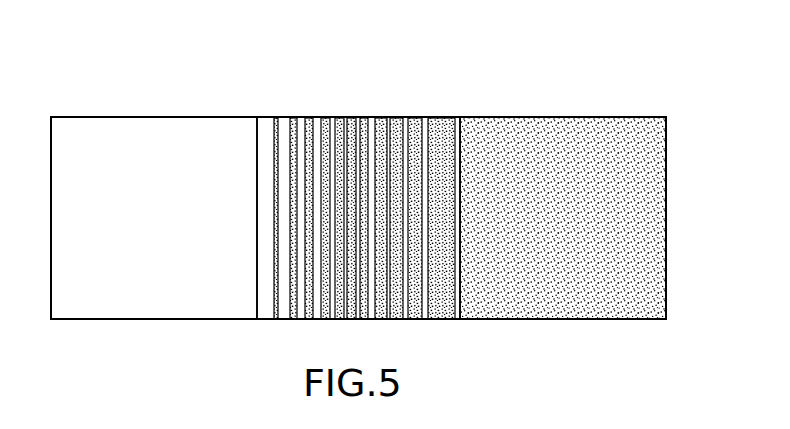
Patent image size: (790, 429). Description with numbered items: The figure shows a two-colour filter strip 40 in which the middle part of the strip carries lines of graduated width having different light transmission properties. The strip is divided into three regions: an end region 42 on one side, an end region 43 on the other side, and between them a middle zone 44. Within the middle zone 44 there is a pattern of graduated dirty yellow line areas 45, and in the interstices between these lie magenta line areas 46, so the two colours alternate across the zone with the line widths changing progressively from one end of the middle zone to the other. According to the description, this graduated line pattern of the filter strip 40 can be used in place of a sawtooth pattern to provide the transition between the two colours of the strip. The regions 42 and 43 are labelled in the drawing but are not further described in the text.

The two-colour filter strip 40 is at (624, 68).
The clear (unexposed) region 42 is at (257, 65).
The uniformly dense region 43 is at (666, 70).
The middle zone 44 is at (460, 65).
The dirty yellow line areas 45 is at (305, 320).
The magenta line areas 46 is at (326, 320).